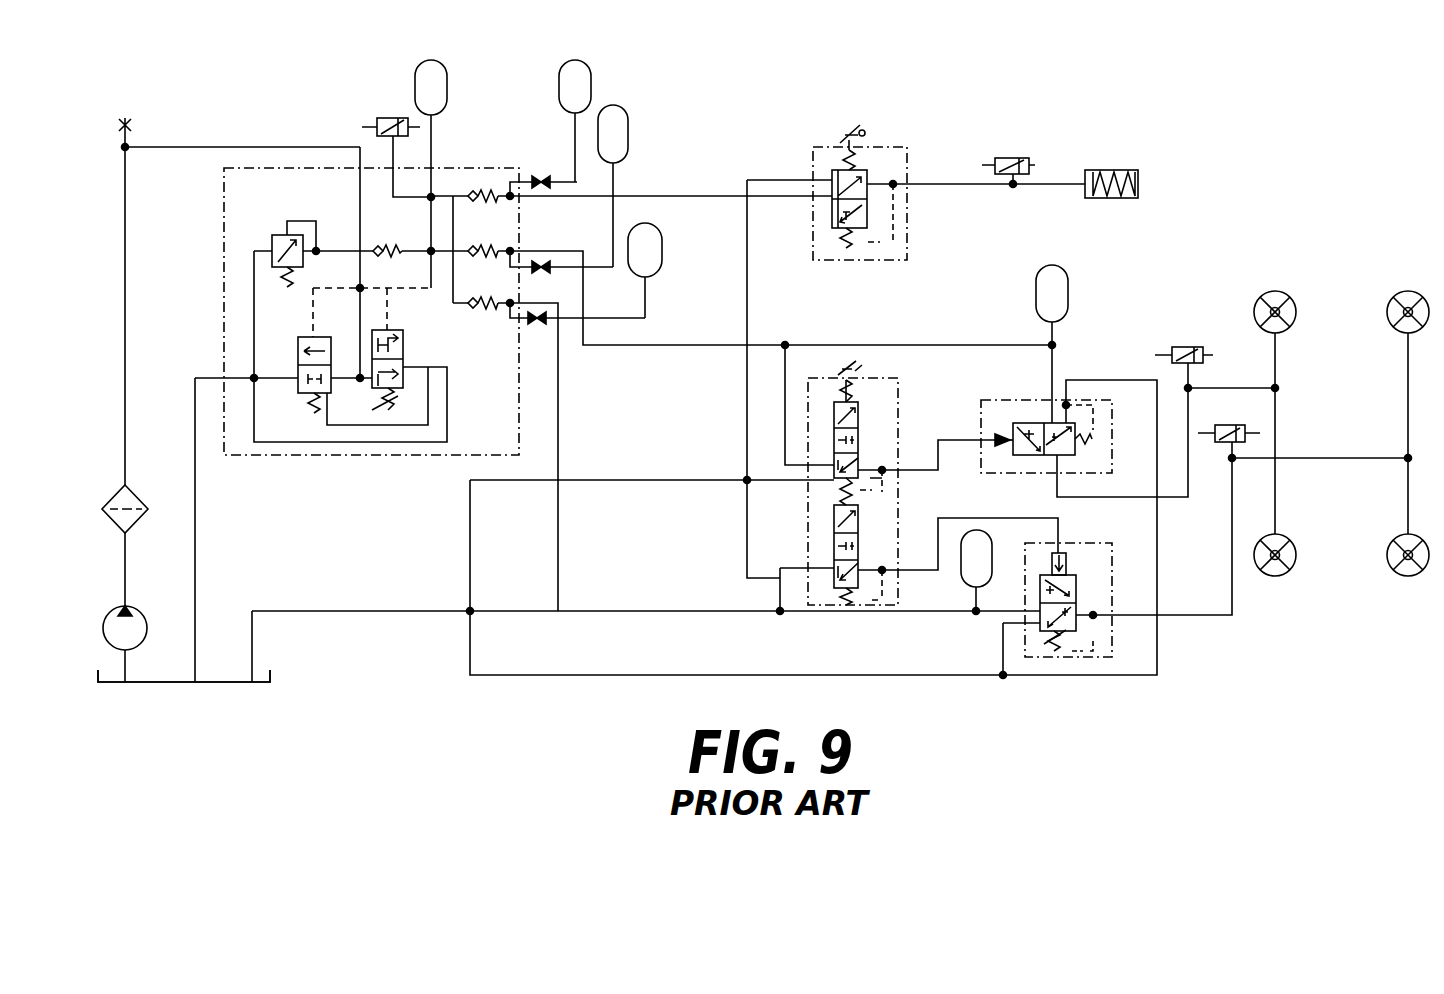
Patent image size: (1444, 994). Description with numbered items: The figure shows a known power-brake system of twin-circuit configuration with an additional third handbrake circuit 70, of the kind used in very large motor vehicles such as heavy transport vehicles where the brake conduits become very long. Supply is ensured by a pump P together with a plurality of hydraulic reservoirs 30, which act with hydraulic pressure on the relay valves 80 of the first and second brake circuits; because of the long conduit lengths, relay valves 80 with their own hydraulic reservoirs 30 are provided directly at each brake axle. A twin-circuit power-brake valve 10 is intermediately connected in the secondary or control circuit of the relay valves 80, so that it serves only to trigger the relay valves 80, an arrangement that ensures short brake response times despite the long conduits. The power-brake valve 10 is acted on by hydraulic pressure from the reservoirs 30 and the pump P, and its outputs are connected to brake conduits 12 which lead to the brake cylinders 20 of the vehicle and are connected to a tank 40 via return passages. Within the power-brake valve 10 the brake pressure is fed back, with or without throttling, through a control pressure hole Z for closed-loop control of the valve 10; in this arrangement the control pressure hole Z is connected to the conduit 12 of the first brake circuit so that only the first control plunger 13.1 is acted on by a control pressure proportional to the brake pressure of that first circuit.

The twin-circuit power-brake valve 10 is at (885, 376).
The brake conduit 12 is at (940, 458).
The first control plunger 13.1 is at (834, 440).
The brake cylinder 20 is at (1384, 297).
The hydraulic reservoir 30 is at (411, 78).
The tank 40 is at (155, 668).
The handbrake circuit 70 is at (824, 146).
The relay valve 80 is at (1172, 585).
The pump P is at (104, 611).
The control pressure hole Z is at (884, 492).